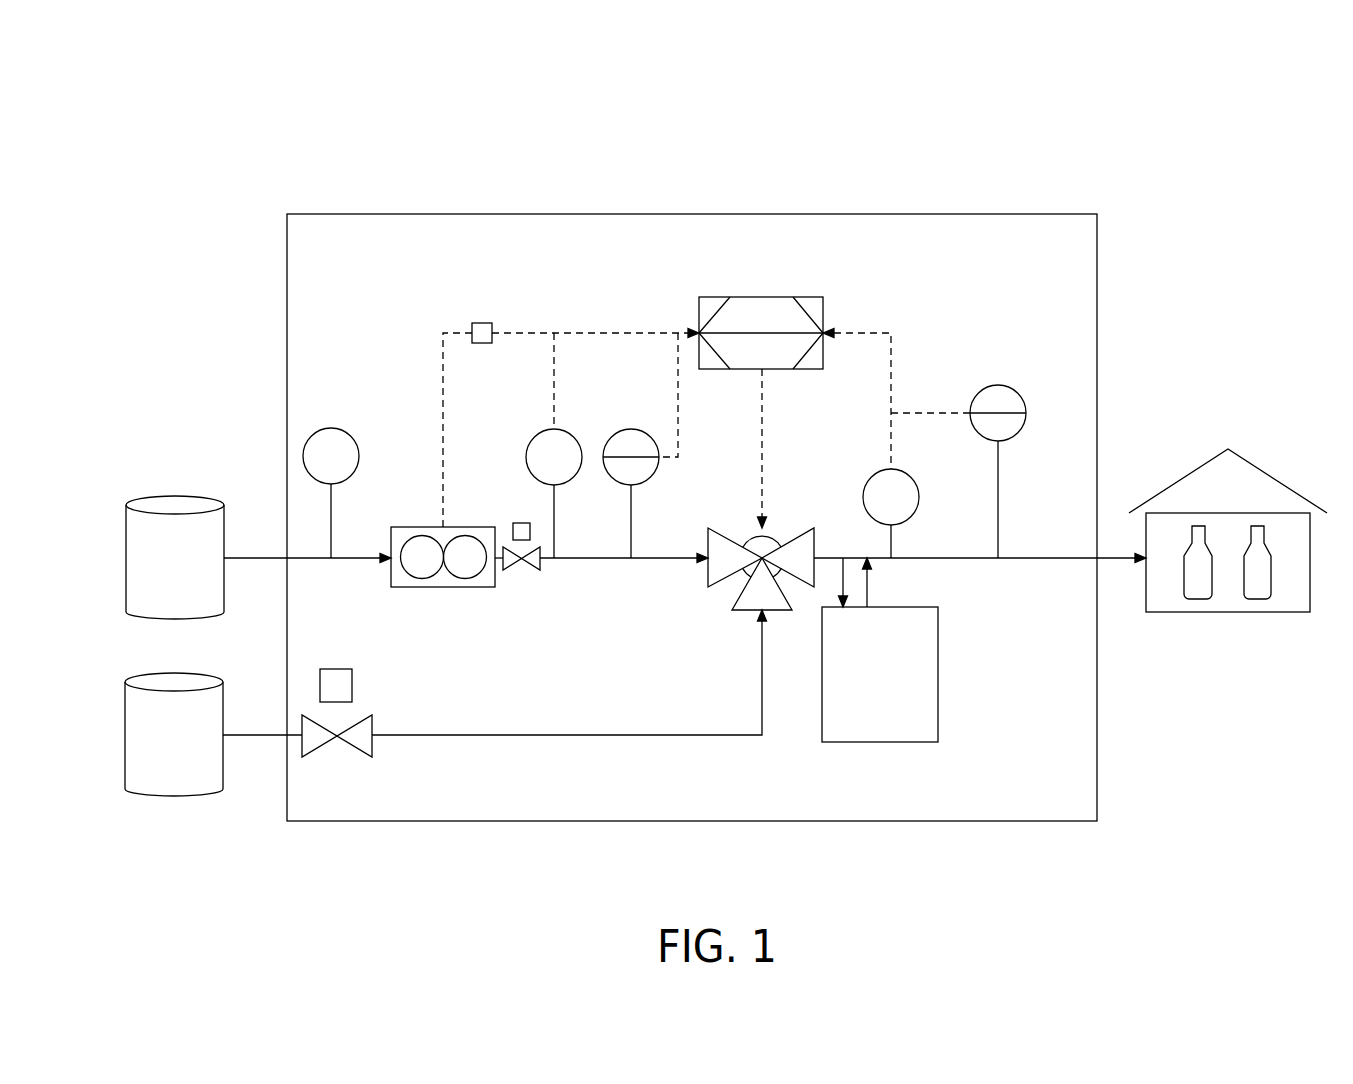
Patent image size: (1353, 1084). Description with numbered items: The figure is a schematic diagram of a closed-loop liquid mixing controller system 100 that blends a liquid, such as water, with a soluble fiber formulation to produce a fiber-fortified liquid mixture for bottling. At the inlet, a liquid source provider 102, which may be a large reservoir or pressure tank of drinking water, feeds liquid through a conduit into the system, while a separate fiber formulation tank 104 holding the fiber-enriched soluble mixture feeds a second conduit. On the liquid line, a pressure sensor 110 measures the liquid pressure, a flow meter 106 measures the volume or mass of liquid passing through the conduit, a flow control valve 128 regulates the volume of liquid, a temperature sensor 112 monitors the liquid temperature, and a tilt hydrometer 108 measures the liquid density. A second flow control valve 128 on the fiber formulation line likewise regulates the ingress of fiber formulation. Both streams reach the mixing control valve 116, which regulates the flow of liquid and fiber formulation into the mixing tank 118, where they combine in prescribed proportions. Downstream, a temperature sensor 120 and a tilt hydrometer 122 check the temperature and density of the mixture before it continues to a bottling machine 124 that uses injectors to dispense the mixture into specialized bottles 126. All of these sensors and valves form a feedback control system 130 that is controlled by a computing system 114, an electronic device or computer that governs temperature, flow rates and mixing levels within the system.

The mixing controller system 100 is at (978, 127).
The liquid source provider 102 is at (185, 483).
The fiber formulation tank 104 is at (177, 810).
The flow meter 106 is at (462, 587).
The tilt hydrometer 108 is at (656, 474).
The pressure sensor 110 is at (332, 429).
The temperature sensor 112 is at (554, 429).
The computing system 114 is at (772, 297).
The mixing control valve 116 is at (788, 517).
The mixing tank 118 is at (938, 656).
The temperature sensor 120 is at (918, 500).
The tilt hydrometer 122 is at (998, 385).
The bottling machine 124 is at (1248, 448).
The bottles 126 is at (1235, 595).
The flow control valve 128 is at (521, 560).
The feedback control system 130 is at (498, 317).